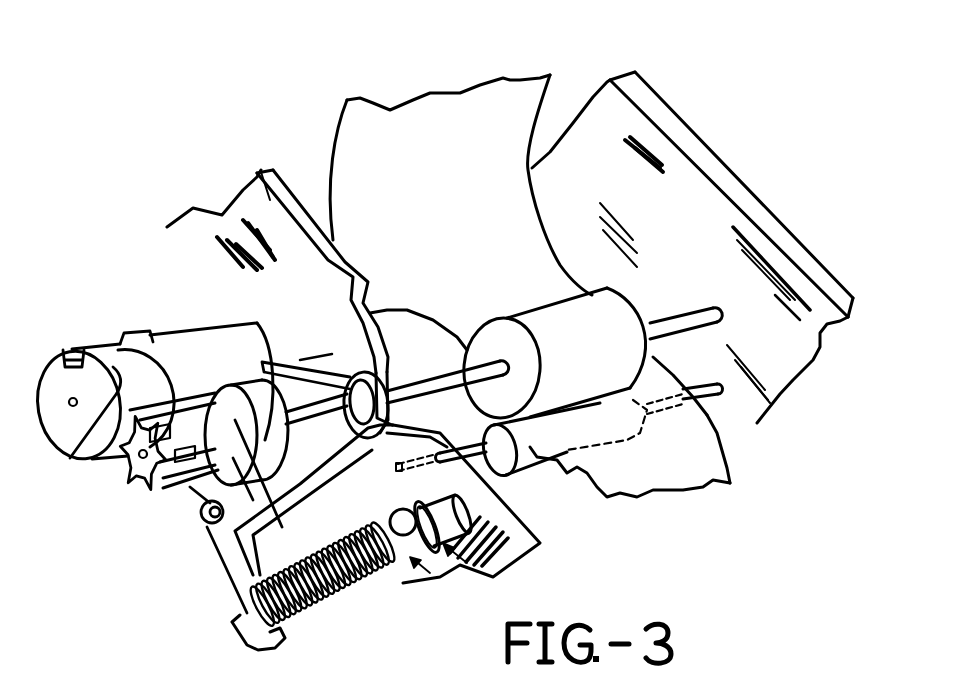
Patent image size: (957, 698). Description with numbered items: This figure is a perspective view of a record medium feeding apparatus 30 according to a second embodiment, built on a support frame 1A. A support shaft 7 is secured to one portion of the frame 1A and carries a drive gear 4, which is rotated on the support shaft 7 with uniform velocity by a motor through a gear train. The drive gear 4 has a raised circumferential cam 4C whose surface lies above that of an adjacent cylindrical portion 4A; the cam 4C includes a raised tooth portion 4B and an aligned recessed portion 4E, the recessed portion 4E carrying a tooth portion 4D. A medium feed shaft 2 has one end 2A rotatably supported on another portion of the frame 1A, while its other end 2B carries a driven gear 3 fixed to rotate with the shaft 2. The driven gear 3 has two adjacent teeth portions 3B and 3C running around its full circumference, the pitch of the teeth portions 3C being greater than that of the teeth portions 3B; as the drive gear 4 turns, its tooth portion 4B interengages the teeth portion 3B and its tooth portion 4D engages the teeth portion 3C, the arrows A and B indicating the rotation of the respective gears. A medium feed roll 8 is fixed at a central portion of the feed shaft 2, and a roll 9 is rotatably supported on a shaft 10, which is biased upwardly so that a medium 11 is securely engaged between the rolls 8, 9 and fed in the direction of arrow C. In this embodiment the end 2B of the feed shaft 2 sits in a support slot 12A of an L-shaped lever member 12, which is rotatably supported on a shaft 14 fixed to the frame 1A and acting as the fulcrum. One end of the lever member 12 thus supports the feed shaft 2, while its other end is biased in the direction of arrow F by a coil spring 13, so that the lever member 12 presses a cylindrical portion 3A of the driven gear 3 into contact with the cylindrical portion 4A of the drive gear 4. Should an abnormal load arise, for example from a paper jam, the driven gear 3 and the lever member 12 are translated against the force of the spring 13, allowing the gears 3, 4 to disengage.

The medium feed apparatus 30 is at (212, 92).
The support frame 1A is at (258, 172).
The medium 11 is at (497, 118).
The shaft 10 is at (741, 442).
The medium feed shaft 2 is at (428, 382).
The end of medium feed shaft 2A is at (707, 312).
The other end of medium feed shaft 2B is at (322, 355).
The medium feed roll 8 is at (560, 312).
The roll 9 is at (559, 453).
The L-shaped lever member 12 is at (416, 402).
The support slot 12A is at (347, 377).
The support shaft 7 is at (275, 362).
The drive gear 4 is at (55, 362).
The cylindrical portion 4A is at (202, 342).
The raised tooth portion 4B is at (145, 335).
The circumferential cam 4C is at (72, 462).
The tooth portion 4D is at (72, 363).
The recessed portion 4E is at (68, 362).
The driven gear 3 is at (180, 466).
The cylindrical portion of driven gear 3A is at (314, 500).
The teeth portion 3B is at (255, 481).
The teeth portion 3C is at (145, 489).
The shaft 14 is at (205, 557).
The coil spring 13 is at (353, 571).
The rotation direction arrow A is at (50, 452).
The rotation direction arrow B is at (121, 485).
The arrow C is at (429, 130).
The arrow F is at (260, 690).